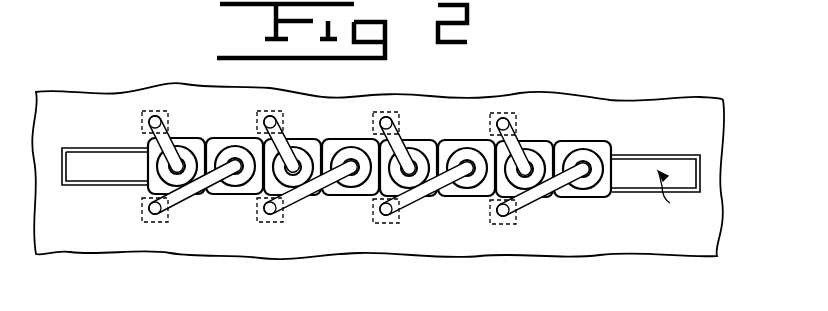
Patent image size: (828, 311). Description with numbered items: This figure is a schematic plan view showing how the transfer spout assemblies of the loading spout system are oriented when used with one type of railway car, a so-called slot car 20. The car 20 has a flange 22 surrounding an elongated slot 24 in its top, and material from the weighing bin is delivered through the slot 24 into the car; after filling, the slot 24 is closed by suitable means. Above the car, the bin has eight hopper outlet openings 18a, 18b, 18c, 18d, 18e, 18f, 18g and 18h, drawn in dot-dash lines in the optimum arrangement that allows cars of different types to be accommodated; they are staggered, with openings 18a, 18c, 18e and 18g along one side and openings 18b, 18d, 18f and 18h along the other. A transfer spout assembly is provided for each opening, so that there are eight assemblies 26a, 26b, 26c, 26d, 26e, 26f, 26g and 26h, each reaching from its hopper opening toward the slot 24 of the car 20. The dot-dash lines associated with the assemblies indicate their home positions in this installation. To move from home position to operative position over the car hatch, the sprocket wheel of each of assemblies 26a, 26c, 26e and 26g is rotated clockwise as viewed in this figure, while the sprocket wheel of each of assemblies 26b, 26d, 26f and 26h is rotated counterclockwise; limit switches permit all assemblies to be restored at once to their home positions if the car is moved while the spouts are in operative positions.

The hopper outlet opening 18a is at (165, 108).
The hopper outlet opening 18b is at (160, 223).
The hopper outlet opening 18c is at (282, 110).
The hopper outlet opening 18d is at (277, 225).
The hopper outlet opening 18e is at (398, 114).
The hopper outlet opening 18f is at (385, 225).
The hopper outlet opening 18g is at (503, 111).
The hopper outlet opening 18h is at (518, 222).
The slot car 20 is at (712, 130).
The flange 22 is at (640, 156).
The elongated slot 24 is at (677, 195).
The transfer spout assembly 26a is at (174, 151).
The transfer spout assembly 26b is at (193, 188).
The transfer spout assembly 26c is at (288, 152).
The transfer spout assembly 26d is at (308, 192).
The transfer spout assembly 26e is at (405, 152).
The transfer spout assembly 26f is at (423, 192).
The transfer spout assembly 26g is at (520, 150).
The transfer spout assembly 26h is at (552, 185).